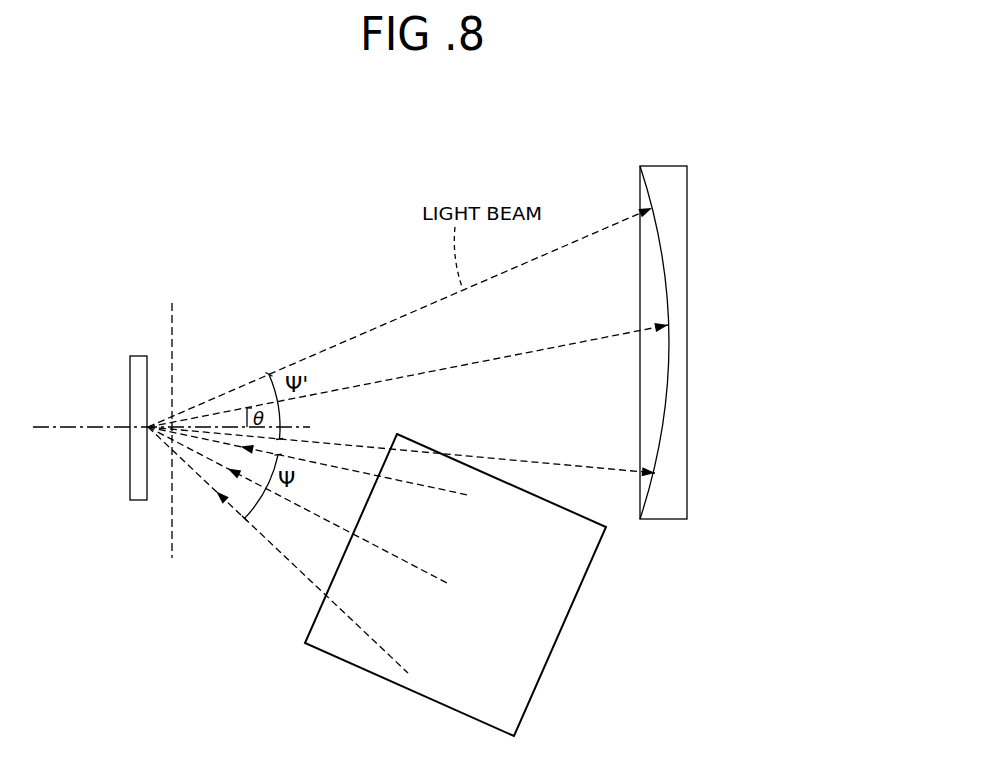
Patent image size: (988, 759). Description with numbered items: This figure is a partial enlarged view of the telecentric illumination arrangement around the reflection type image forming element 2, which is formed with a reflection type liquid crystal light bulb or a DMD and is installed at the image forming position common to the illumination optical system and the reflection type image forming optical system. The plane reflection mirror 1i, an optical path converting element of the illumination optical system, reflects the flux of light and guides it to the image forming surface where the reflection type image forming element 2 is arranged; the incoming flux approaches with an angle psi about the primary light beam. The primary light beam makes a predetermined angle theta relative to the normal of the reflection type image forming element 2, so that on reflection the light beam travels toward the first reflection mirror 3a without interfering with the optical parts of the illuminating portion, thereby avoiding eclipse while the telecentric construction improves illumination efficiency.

The reflection type image forming element 2 is at (135, 500).
The first reflection mirror 3a is at (672, 297).
The plane reflection mirror 1i is at (530, 668).